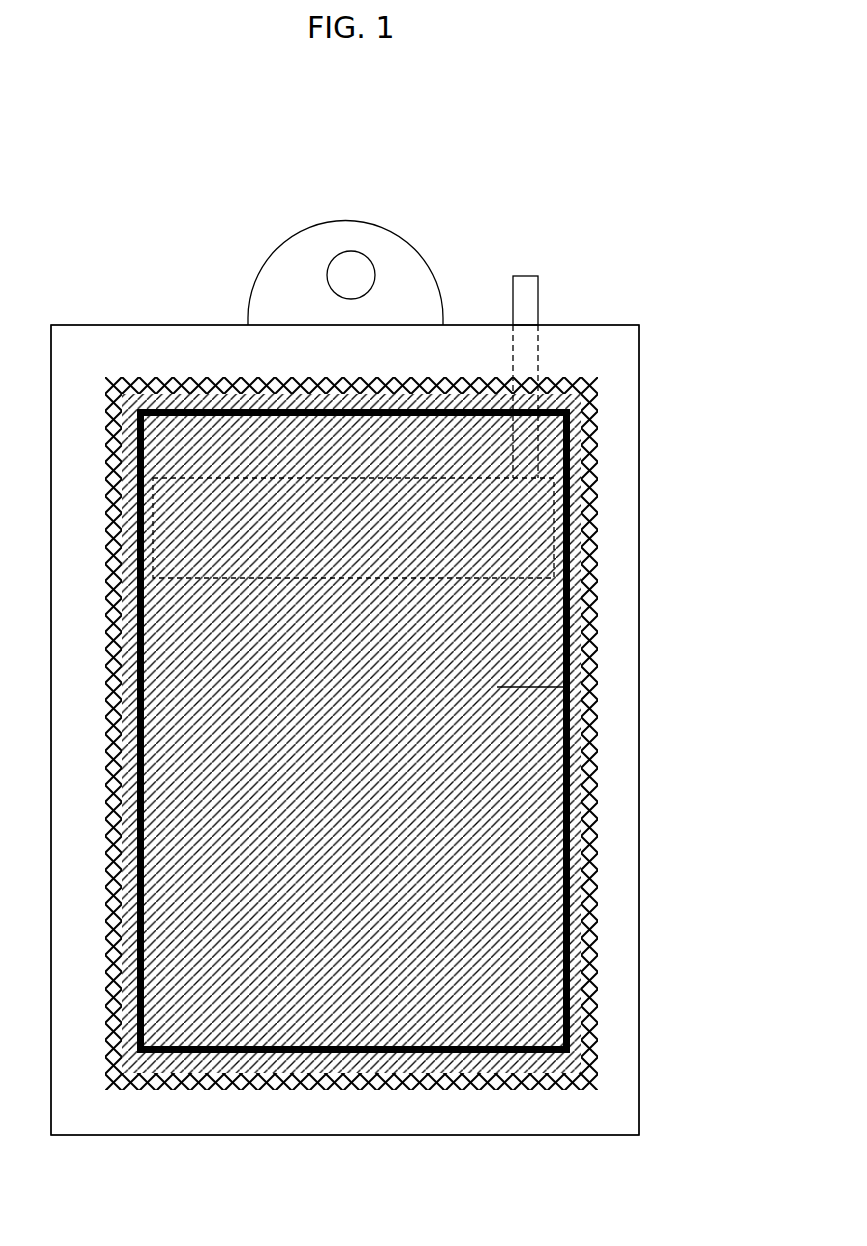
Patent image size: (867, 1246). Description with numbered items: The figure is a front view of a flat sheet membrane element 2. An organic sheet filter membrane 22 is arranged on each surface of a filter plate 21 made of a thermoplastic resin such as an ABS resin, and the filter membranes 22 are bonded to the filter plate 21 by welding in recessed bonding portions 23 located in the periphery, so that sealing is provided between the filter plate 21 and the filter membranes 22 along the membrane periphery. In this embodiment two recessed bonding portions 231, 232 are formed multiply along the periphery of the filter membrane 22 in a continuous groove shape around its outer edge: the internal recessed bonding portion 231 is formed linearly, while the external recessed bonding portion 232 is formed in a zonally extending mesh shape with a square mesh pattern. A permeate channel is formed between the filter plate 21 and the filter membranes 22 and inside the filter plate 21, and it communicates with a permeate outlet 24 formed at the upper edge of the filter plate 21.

The flat sheet membrane element 2 is at (600, 326).
The filter plate 21 is at (621, 460).
The filter membrane 22 is at (598, 680).
The recessed bonding portions 23 is at (434, 733).
The internal recessed bonding portion 231 is at (598, 826).
The external recessed bonding portion 232 is at (598, 782).
The permeate outlet 24 is at (540, 300).